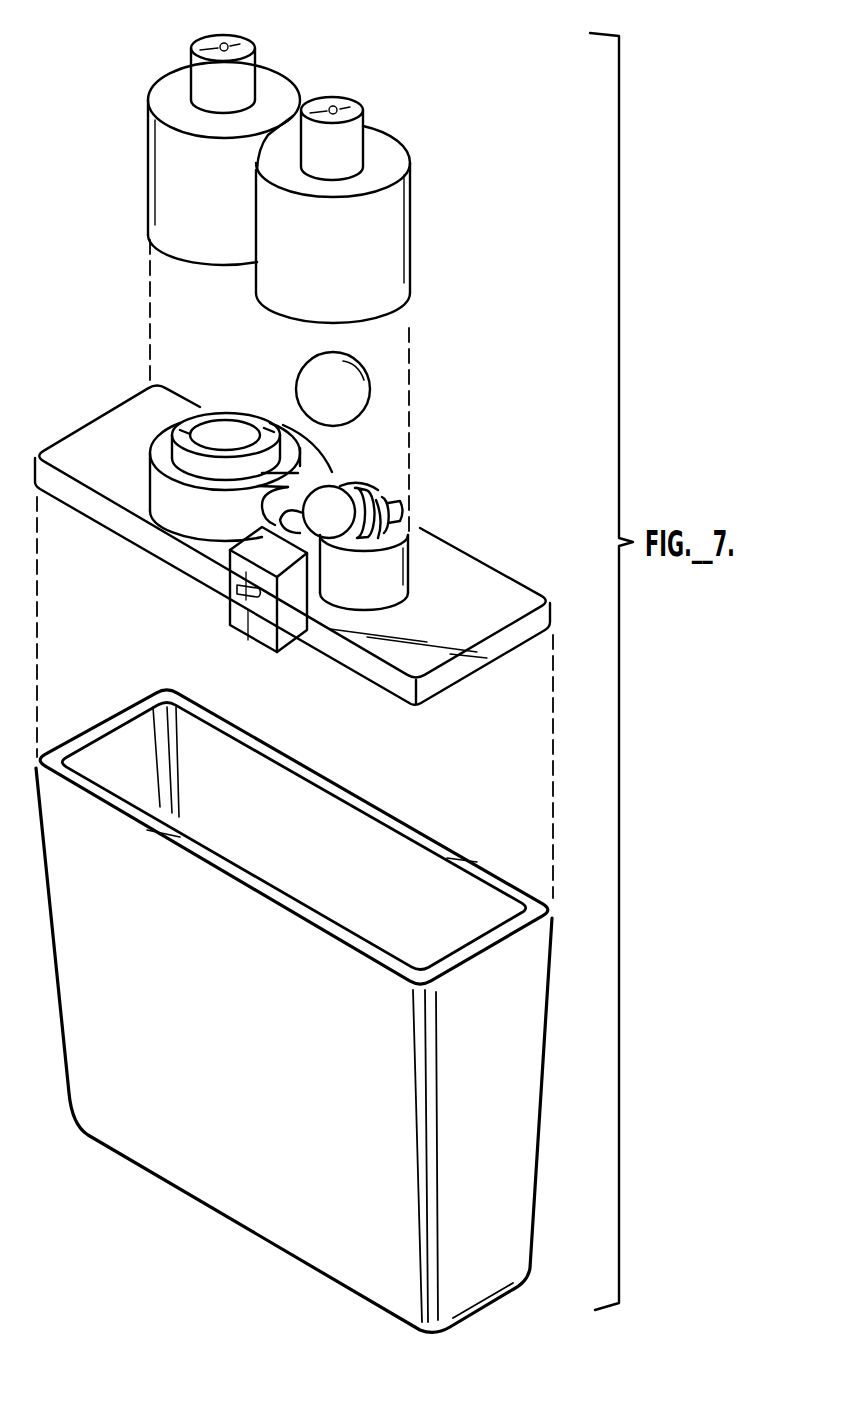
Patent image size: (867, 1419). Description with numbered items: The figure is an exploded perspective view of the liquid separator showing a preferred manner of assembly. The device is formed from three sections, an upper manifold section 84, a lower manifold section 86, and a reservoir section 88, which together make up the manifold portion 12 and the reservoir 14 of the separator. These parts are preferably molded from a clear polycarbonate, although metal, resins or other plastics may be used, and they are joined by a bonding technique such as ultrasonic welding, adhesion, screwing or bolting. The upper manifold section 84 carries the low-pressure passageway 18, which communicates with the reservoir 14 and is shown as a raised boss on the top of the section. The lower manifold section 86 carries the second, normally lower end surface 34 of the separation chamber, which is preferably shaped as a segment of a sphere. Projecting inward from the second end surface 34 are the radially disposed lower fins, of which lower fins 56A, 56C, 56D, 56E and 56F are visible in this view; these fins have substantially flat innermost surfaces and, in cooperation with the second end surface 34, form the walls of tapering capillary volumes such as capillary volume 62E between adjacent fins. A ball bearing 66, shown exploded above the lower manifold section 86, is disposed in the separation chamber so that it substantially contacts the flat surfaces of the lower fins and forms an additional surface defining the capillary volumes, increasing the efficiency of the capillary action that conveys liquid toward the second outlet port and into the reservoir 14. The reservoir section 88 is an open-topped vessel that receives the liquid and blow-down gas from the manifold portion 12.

The manifold portion 12 is at (365, 250).
The reservoir 14 is at (294, 1011).
The low-pressure passageway 18 is at (225, 45).
The second end surface 34 is at (345, 490).
The lower fin 56A is at (333, 500).
The lower fin 56C is at (318, 540).
The lower fin 56D is at (380, 524).
The lower fin 56E is at (373, 512).
The lower fin 56F is at (283, 517).
The capillary volume 62E is at (386, 518).
The ball bearing 66 is at (345, 372).
The upper manifold section 84 is at (319, 192).
The lower manifold section 86 is at (478, 562).
The reservoir section 88 is at (447, 845).